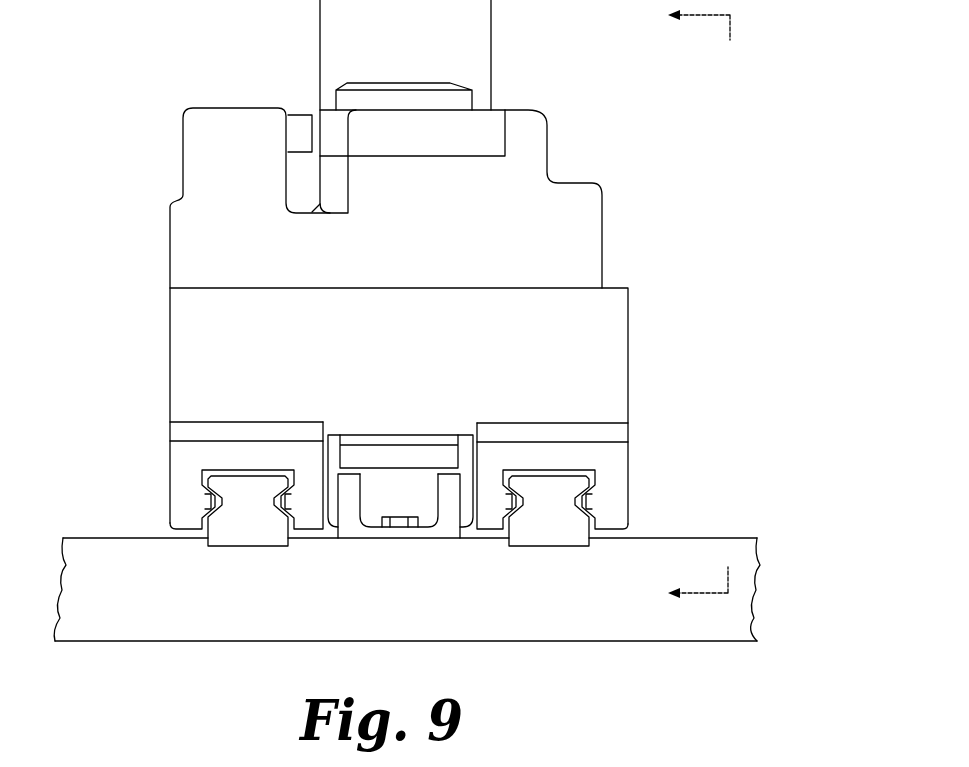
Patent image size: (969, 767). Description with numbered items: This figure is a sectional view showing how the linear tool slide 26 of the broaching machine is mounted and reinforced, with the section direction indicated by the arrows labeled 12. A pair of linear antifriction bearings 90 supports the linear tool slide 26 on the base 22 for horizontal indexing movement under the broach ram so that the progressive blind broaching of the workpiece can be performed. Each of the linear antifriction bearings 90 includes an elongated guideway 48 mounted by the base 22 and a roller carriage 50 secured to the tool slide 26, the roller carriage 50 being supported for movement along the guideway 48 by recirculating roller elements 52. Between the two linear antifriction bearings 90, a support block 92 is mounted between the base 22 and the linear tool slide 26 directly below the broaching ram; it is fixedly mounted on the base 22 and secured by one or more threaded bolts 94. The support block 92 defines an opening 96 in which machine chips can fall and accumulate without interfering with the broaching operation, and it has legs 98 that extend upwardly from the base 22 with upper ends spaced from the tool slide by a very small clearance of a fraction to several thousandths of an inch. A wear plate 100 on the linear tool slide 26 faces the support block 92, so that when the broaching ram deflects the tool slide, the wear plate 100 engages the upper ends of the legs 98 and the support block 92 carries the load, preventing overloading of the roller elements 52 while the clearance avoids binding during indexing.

The section line indicator 12 is at (678, 305).
The base 22 is at (712, 540).
The linear tool slide 26 is at (569, 166).
The elongated guideways 48 is at (255, 538).
The roller carriages 50 is at (187, 452).
The recirculating roller elements 52 is at (213, 507).
The linear antifriction bearings 90 is at (164, 455).
The support block 92 is at (438, 531).
The threaded bolts 94 is at (393, 517).
The opening 96 is at (437, 495).
The legs 98 is at (345, 483).
The wear plates 100 is at (366, 453).